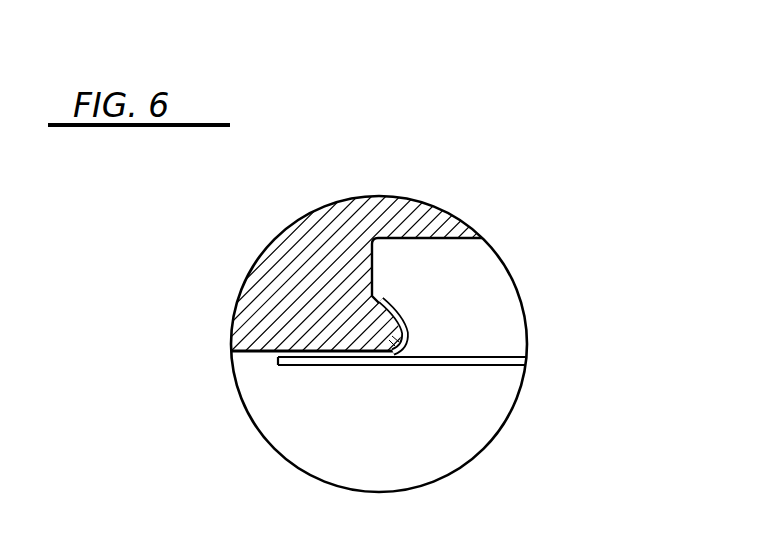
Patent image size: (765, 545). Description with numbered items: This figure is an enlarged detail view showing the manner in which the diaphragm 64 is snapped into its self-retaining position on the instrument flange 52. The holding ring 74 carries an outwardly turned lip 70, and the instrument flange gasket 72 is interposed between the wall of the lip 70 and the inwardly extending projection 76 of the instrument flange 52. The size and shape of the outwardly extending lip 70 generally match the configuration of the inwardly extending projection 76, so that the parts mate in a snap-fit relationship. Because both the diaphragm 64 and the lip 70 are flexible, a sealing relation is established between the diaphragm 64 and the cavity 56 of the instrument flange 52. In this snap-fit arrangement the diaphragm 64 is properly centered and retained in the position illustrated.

The instrument flange 52 is at (412, 200).
The cavity 56 is at (462, 307).
The diaphragm 64 is at (278, 358).
The outwardly turned lip 70 is at (395, 312).
The instrument flange gasket 72 is at (408, 343).
The holding ring 74 is at (300, 352).
The inwardly extending projection 76 is at (376, 337).